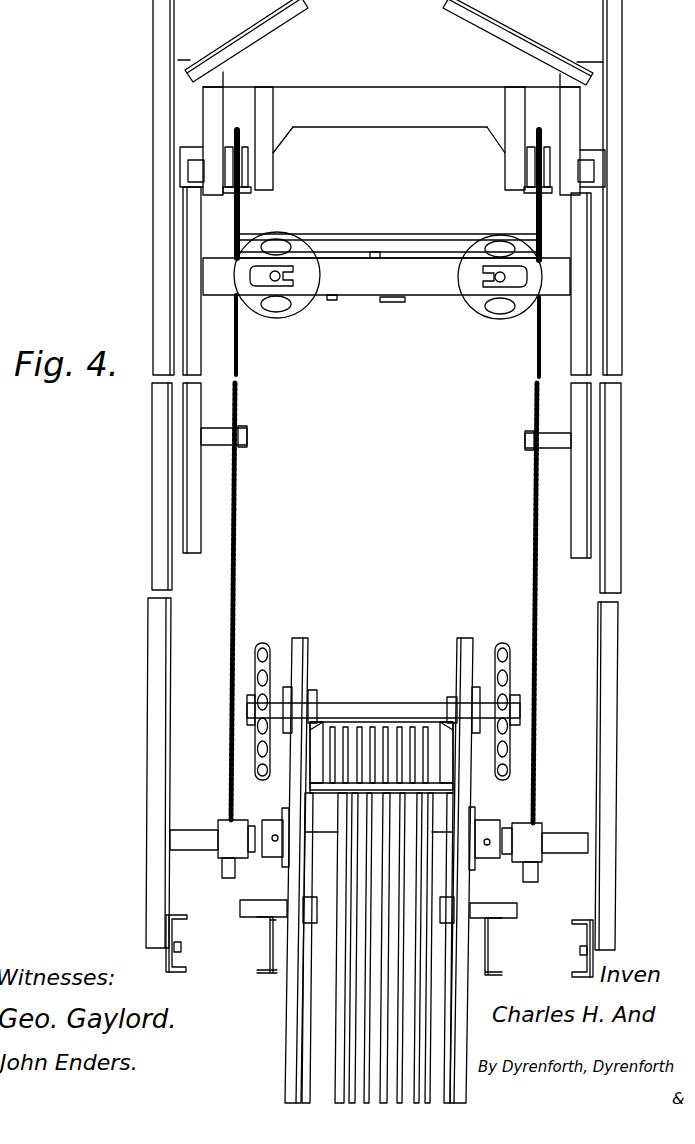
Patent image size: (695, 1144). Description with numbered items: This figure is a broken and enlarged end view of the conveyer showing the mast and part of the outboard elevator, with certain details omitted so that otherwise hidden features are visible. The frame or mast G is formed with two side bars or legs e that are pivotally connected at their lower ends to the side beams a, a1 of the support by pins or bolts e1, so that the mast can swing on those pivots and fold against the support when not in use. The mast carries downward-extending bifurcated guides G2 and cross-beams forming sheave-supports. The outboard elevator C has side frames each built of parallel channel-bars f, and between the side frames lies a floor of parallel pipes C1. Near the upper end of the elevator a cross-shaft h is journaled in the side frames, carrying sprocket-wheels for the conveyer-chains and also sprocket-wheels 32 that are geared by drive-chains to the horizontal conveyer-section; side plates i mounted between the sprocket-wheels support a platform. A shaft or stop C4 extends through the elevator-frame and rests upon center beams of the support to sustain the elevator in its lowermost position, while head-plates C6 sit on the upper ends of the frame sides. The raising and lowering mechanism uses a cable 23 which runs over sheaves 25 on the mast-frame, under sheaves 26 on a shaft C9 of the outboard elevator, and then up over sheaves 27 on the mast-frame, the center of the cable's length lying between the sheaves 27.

The frame or mast G is at (391, 97).
The downward-extending bifurcated guides G2 is at (193, 470).
The side bars or legs e is at (157, 464).
The pins or bolts e1 is at (181, 947).
The cable 23 is at (536, 530).
The sheaves 25 is at (240, 203).
The sheaves 27 is at (297, 308).
The sheaves 26 is at (227, 806).
The sprocket-wheels 32 is at (255, 683).
The head-plates C6 is at (287, 640).
The shaft C9 is at (183, 838).
The shaft or stop C4 is at (245, 907).
The parallel pipes C1 is at (395, 877).
The cross-shaft h is at (369, 712).
The side plates i is at (323, 767).
The side beam a is at (170, 925).
The side beam a1 is at (584, 930).
The outboard elevator C is at (254, 1013).
The channel-bars f is at (290, 1060).